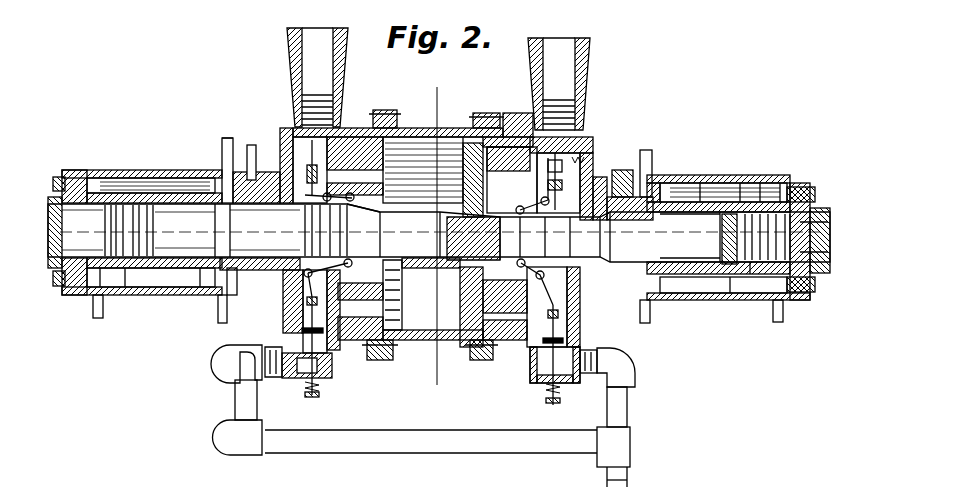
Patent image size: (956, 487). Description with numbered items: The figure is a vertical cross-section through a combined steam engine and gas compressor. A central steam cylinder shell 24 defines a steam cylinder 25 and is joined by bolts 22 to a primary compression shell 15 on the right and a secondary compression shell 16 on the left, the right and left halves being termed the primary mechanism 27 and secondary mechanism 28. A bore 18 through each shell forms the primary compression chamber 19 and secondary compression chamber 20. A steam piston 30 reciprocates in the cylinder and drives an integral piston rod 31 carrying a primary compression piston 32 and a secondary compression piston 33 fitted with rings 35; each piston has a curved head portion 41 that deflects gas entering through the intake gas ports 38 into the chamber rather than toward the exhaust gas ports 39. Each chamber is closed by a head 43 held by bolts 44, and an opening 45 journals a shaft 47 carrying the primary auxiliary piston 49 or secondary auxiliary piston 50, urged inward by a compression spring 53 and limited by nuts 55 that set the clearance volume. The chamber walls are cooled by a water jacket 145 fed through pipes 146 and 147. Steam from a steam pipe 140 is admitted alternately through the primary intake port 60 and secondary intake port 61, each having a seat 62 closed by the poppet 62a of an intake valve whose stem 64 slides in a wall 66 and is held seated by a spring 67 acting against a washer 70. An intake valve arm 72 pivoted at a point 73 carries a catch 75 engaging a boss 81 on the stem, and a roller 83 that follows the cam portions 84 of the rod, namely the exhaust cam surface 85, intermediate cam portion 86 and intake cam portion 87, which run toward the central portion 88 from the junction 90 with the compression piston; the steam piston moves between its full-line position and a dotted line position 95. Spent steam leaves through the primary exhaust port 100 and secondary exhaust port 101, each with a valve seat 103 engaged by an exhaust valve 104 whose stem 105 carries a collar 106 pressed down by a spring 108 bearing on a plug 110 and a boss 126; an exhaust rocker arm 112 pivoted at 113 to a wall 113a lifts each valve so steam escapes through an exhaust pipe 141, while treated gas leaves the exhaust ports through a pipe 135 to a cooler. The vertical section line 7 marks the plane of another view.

The section line 7 is at (420, 87).
The primary compression shell 15 is at (682, 177).
The secondary compression shell 16 is at (113, 192).
The bore 18 is at (185, 190).
The primary compression chamber 19 is at (721, 194).
The secondary compression chamber 20 is at (178, 215).
The bolts 22 is at (402, 111).
The steam cylinder shell 24 is at (444, 131).
The steam cylinder 25 is at (410, 140).
The primary mechanism 27 is at (665, 117).
The secondary mechanism 28 is at (236, 133).
The steam piston 30 is at (433, 347).
The piston rod 31 is at (458, 210).
The primary compression piston 32 is at (733, 199).
The secondary compression piston 33 is at (207, 281).
The rings 35 is at (305, 214).
The intake gas ports 38 is at (206, 222).
The exhaust gas ports 39 is at (228, 328).
The curved head portion 41 is at (730, 230).
The head 43 is at (797, 186).
The bolts 44 is at (68, 178).
The opening 45 is at (807, 223).
The shaft 47 is at (800, 322).
The primary auxiliary piston 49 is at (740, 281).
The secondary auxiliary piston 50 is at (123, 274).
The compression spring 53 is at (739, 291).
The nuts 55 is at (58, 292).
The primary intake port 60 is at (537, 134).
The secondary intake port 61 is at (333, 158).
The seat 62 is at (590, 136).
The poppet 62a is at (553, 133).
The stem 64 is at (525, 121).
The wall 66 is at (496, 128).
The spring 67 is at (598, 183).
The washer 70 is at (625, 178).
The intake valve arm 72 is at (590, 161).
The pivot point 73 is at (512, 180).
The catch 75 is at (585, 146).
The boss 81 is at (565, 139).
The roller 83 is at (532, 237).
The cam portions 84 is at (432, 233).
The exhaust cam surface 85 is at (362, 221).
The intermediate cam portion 86 is at (398, 308).
The intake cam portion 87 is at (410, 227).
The central portion 88 is at (498, 252).
The junction 90 is at (591, 237).
The dotted line position 95 is at (410, 348).
The primary exhaust port 100 is at (532, 361).
The secondary exhaust port 101 is at (338, 348).
The valve seats 103 is at (582, 352).
The exhaust valves 104 is at (303, 331).
The stems 105 is at (305, 383).
The collar 106 is at (310, 397).
The spring 108 is at (319, 394).
The plug 110 is at (612, 371).
The exhaust rocker arm 112 is at (343, 299).
The pivot 113 is at (527, 301).
The wall 113a is at (563, 291).
The boss 126 is at (305, 301).
The pipe 135 is at (219, 321).
The steam pipe 140 is at (325, 59).
The exhaust pipe 141 is at (622, 481).
The water jacket 145 is at (770, 193).
The pipes 146 is at (251, 146).
The pipes 147 is at (97, 319).